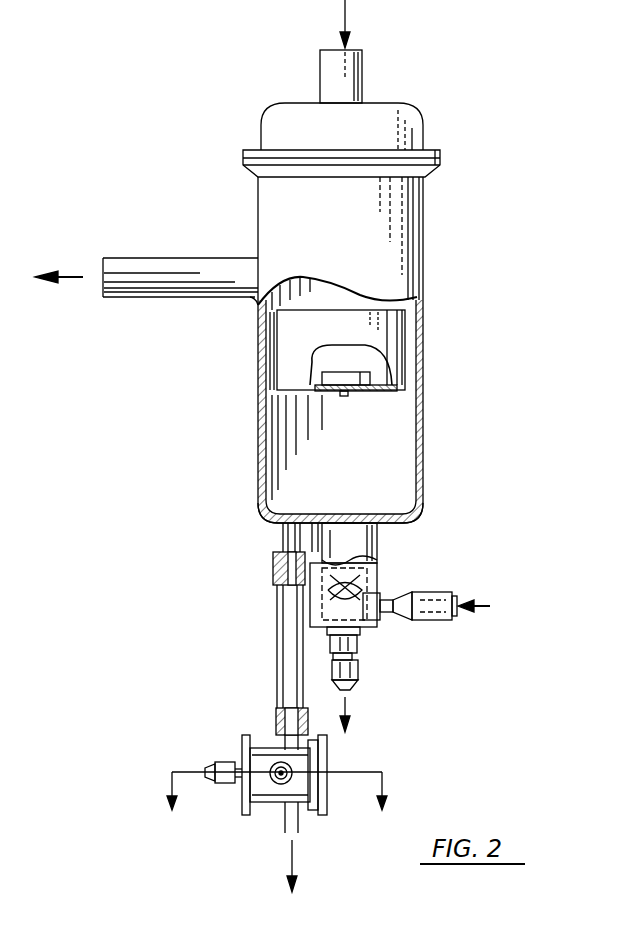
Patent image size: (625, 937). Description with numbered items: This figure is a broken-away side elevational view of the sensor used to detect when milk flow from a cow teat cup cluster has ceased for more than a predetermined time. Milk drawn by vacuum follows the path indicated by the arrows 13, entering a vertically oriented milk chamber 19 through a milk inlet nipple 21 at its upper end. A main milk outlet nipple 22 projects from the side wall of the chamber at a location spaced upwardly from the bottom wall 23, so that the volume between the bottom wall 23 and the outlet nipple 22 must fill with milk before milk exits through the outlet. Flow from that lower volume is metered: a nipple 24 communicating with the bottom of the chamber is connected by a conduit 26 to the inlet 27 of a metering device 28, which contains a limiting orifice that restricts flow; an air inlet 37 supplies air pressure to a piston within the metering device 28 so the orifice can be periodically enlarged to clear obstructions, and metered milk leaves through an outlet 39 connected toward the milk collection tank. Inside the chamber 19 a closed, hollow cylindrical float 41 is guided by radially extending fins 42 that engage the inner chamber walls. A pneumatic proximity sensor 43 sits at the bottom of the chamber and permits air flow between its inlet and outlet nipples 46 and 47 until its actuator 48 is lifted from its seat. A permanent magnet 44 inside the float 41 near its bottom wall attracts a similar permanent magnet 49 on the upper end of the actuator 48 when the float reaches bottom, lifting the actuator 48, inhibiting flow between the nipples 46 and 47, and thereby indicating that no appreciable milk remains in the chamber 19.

The arrows 13 is at (348, 13).
The milk chamber 19 is at (423, 230).
The milk inlet nipple 21 is at (363, 73).
The main milk outlet nipple 22 is at (160, 258).
The bottom wall 23 is at (398, 508).
The nipple 24 is at (288, 545).
The conduit 26 is at (278, 640).
The inlet 27 is at (282, 722).
The metering device 28 is at (360, 759).
The air inlet 37 is at (220, 762).
The outlet 39 is at (284, 823).
The float 41 is at (404, 340).
The fins 42 is at (413, 323).
The pneumatic proximity sensor 43 is at (448, 566).
The permanent magnet 44 is at (372, 378).
The inlet nipple 46 is at (440, 622).
The outlet nipple 47 is at (360, 670).
The actuator 48 is at (278, 586).
The permanent magnet 49 is at (366, 545).